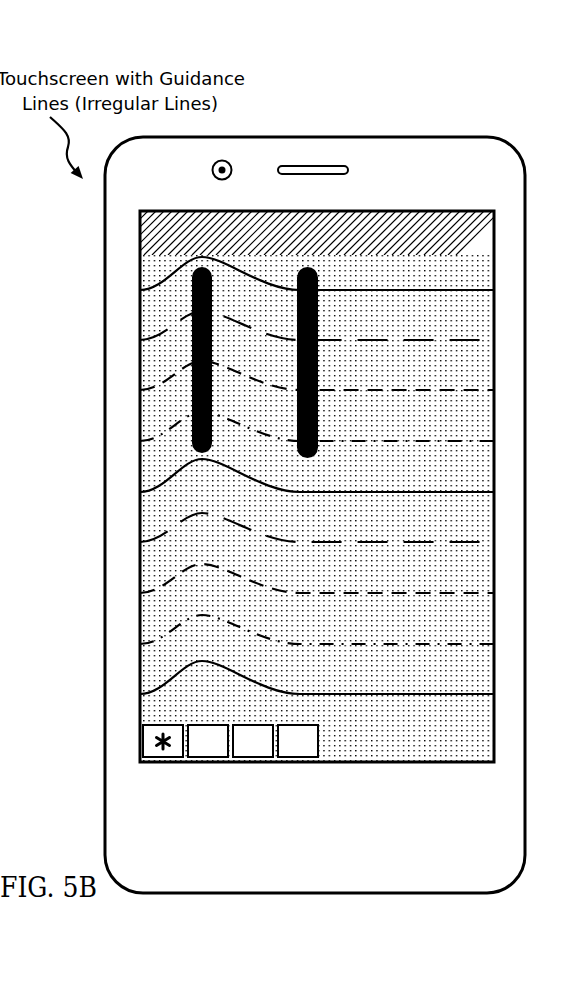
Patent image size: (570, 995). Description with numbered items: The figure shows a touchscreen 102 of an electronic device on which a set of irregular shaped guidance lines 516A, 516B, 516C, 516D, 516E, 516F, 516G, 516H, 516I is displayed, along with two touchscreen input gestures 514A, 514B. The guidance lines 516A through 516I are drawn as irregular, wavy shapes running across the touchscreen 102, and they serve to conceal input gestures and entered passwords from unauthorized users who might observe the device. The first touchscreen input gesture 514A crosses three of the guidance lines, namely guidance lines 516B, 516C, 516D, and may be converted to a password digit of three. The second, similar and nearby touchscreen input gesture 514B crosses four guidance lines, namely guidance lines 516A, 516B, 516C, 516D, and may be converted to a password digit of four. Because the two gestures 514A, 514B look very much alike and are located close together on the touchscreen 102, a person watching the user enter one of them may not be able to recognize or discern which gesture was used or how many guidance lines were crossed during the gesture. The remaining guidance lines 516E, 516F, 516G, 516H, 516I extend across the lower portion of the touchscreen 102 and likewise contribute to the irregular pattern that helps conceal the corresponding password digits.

The touchscreen 102 is at (140, 210).
The touchscreen input gesture 514A is at (212, 348).
The touchscreen input gesture 514B is at (297, 302).
The irregular shaped guidance line 516A is at (415, 290).
The irregular shaped guidance line 516B is at (418, 340).
The irregular shaped guidance line 516C is at (420, 390).
The irregular shaped guidance line 516D is at (405, 441).
The irregular shaped guidance line 516E is at (415, 492).
The irregular shaped guidance line 516F is at (420, 542).
The irregular shaped guidance line 516G is at (420, 593).
The irregular shaped guidance line 516H is at (405, 644).
The irregular shaped guidance line 516I is at (422, 694).